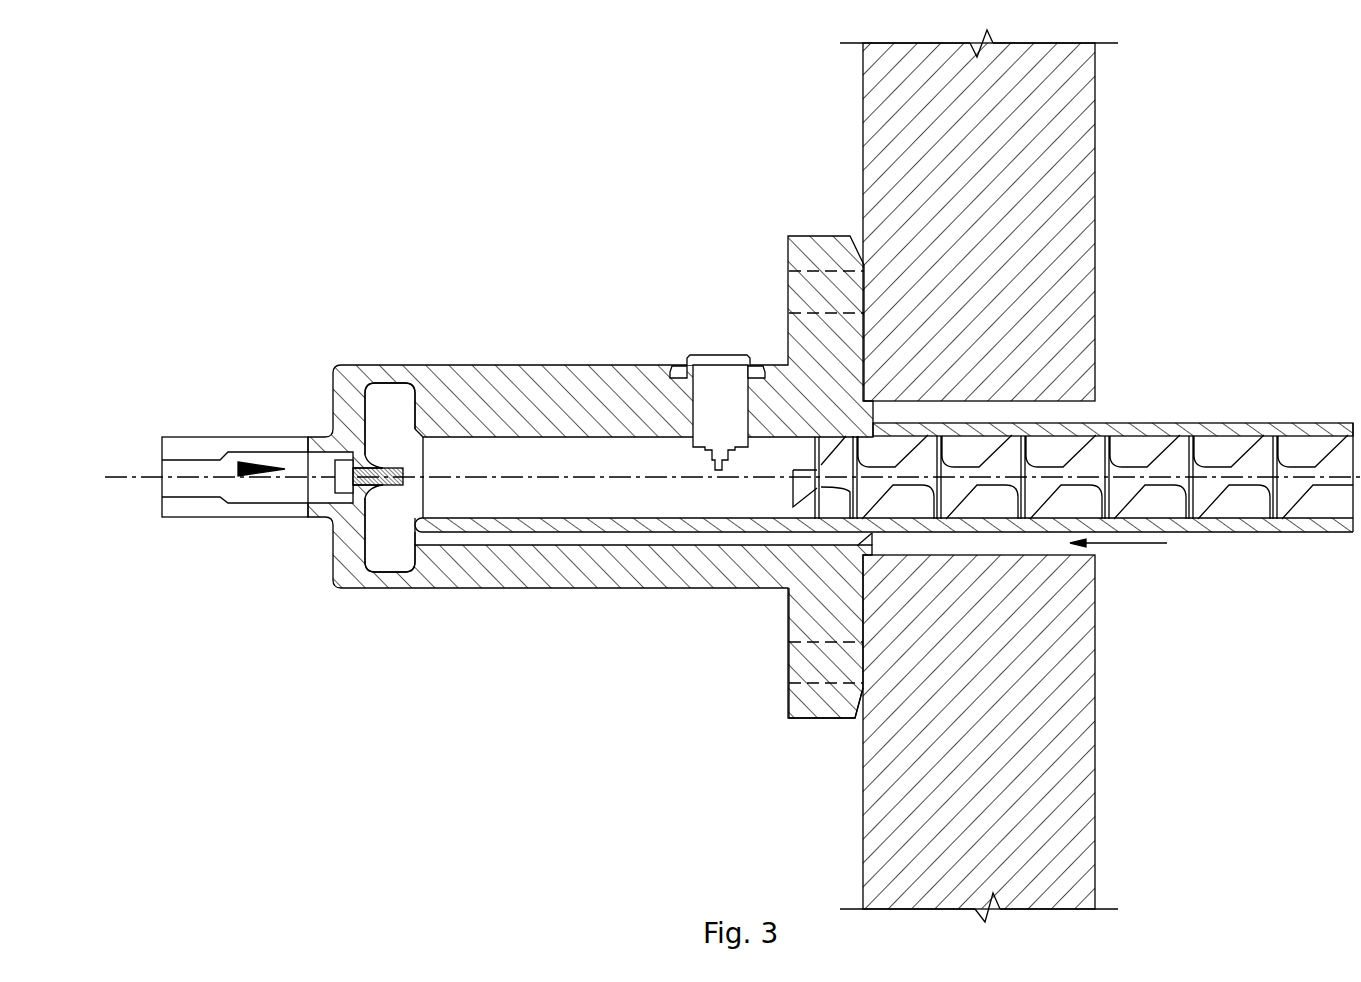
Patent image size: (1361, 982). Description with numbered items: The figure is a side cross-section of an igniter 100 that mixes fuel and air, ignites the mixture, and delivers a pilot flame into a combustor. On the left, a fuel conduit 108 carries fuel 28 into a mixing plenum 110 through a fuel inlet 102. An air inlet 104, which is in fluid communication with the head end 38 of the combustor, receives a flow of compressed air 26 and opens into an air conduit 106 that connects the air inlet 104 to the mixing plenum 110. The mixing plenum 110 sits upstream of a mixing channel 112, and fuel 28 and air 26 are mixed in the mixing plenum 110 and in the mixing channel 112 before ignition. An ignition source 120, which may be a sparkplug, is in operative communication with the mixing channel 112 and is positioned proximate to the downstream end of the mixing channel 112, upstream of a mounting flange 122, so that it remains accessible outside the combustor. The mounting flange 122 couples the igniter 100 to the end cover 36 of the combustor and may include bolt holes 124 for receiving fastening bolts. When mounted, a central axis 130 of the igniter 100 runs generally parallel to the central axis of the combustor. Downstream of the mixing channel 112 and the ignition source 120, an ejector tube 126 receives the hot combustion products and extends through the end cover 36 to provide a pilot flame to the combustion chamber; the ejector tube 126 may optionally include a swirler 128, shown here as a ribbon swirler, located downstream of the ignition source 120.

The compressed air 26 is at (1125, 546).
The fuel 28 is at (244, 476).
The end cover 36 is at (1075, 120).
The head end 38 is at (1208, 708).
The igniter 100 is at (289, 278).
The fuel inlet 102 is at (385, 467).
The air inlet 104 is at (858, 542).
The air conduit 106 is at (608, 538).
The fuel conduit 108 is at (292, 462).
The mixing plenum 110 is at (385, 548).
The mixing channel 112 is at (577, 469).
The ignition source 120 is at (713, 380).
The mounting flange 122 is at (798, 710).
The bolt holes 124 is at (798, 665).
The ejector tube 126 is at (1172, 425).
The swirler 128 is at (1205, 495).
The central axis 130 is at (518, 478).